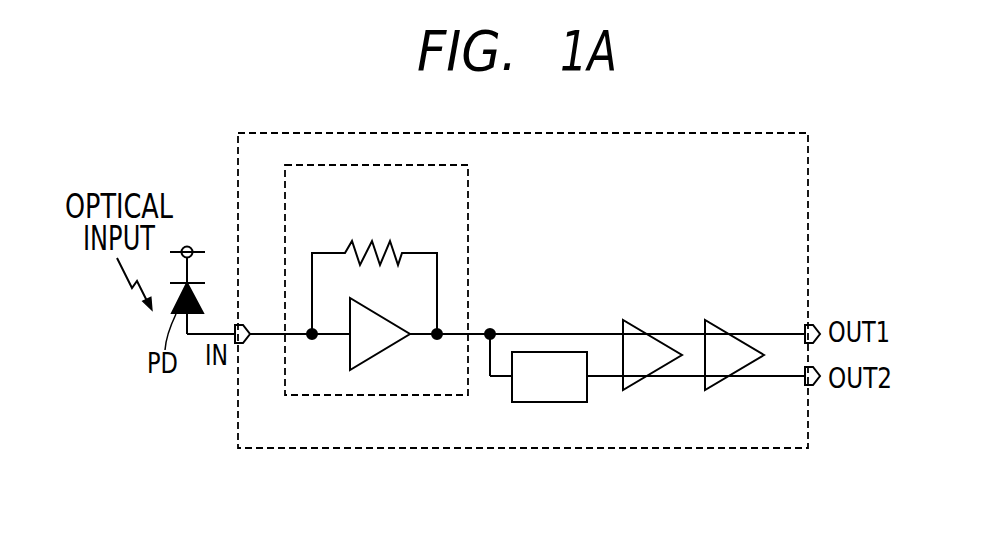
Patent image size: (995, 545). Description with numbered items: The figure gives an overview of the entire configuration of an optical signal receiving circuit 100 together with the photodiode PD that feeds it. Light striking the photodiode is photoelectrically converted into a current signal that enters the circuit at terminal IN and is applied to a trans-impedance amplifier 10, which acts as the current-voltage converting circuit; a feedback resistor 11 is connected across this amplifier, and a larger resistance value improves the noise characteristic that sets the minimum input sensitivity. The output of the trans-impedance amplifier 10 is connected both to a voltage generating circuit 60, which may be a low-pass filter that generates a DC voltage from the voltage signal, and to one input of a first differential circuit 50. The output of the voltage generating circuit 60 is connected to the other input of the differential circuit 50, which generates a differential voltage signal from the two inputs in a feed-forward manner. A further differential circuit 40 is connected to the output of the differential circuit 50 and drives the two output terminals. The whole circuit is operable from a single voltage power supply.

The optical signal receiving circuit 100 is at (808, 178).
The trans-impedance amplifier 10 is at (468, 217).
The feedback resistor 11 is at (372, 242).
The voltage generating circuit 60 is at (510, 395).
The first differential circuit 50 is at (637, 323).
The differential circuit 40 is at (720, 323).